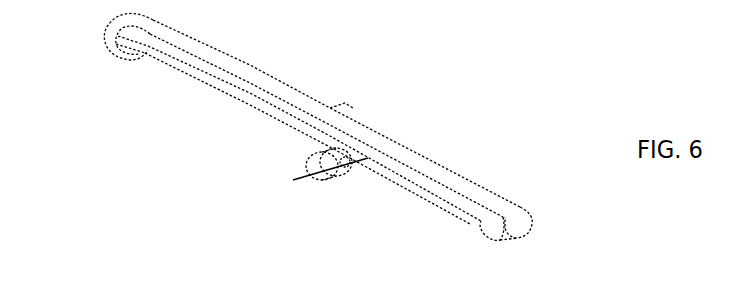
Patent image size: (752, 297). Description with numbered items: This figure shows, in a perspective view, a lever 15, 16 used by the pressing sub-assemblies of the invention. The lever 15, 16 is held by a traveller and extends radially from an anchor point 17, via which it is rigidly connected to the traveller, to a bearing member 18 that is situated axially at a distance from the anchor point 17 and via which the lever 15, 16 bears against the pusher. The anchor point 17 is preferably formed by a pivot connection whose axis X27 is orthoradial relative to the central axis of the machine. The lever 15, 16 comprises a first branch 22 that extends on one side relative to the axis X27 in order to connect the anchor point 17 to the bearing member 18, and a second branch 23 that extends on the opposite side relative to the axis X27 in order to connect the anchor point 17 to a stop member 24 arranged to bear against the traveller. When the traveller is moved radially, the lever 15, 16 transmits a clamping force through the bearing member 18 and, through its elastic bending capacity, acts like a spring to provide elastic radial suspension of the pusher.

The lever 15 is at (468, 89).
The lever 16 is at (313, 135).
The anchor point 17 is at (356, 142).
The bearing member 18 is at (112, 60).
The first branch 22 is at (232, 62).
The second branch 23 is at (452, 178).
The stop member 24 is at (498, 230).
The axis of the pivot connection X27 is at (348, 168).